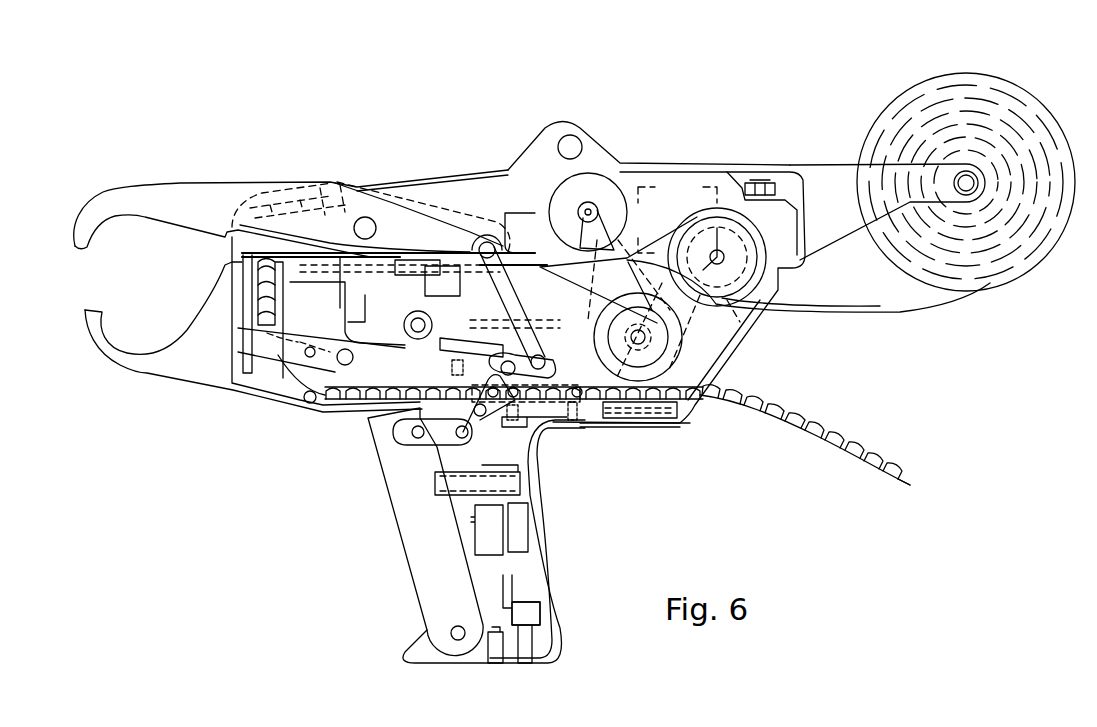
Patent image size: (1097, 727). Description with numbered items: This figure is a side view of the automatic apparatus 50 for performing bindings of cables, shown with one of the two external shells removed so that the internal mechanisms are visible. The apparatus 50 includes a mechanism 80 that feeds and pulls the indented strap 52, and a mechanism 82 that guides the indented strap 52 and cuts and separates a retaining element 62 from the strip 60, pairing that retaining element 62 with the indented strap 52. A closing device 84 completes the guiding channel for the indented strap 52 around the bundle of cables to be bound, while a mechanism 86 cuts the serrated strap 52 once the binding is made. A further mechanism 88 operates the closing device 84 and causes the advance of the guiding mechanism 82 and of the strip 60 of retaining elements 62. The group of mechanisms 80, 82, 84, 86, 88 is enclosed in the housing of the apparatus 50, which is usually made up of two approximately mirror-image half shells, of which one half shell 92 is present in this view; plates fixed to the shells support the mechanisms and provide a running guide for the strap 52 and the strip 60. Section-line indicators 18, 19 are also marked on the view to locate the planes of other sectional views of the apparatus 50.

The section line 18 is at (385, 120).
The section line 19 is at (575, 63).
The apparatus 50 is at (642, 455).
The indented strap 52 is at (907, 313).
The strip 60 is at (793, 433).
The retaining element 62 is at (910, 485).
The mechanism 80 is at (795, 147).
The mechanism 82 is at (333, 338).
The closing device 84 is at (185, 176).
The mechanism 86 is at (232, 398).
The mechanism 88 is at (390, 537).
The half shell 92 is at (533, 585).